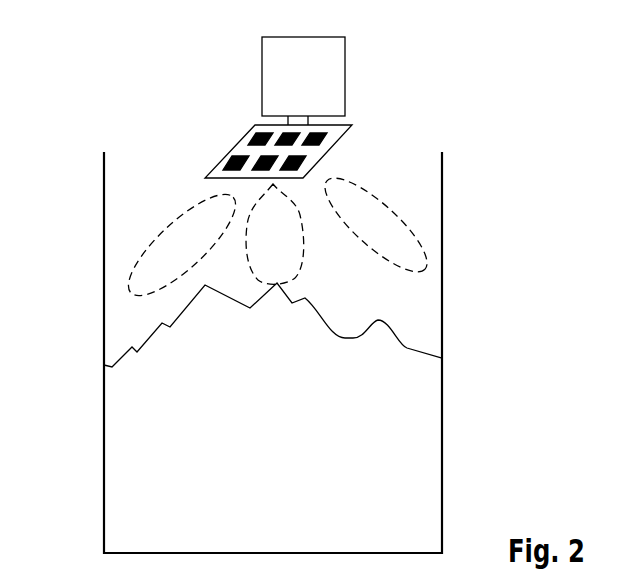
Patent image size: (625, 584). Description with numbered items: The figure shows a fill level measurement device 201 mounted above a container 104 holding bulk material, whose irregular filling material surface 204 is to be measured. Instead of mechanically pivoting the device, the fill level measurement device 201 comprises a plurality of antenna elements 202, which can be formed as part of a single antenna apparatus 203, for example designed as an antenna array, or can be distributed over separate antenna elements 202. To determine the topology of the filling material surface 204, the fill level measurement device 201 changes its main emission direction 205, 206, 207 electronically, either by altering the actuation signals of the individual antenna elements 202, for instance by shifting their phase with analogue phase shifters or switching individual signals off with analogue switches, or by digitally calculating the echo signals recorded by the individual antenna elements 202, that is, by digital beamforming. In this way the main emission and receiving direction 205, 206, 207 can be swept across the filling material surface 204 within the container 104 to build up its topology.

The container 104 is at (442, 418).
The fill level measurement device 201 is at (345, 48).
The antenna elements 202 is at (327, 147).
The antenna apparatus 203 is at (247, 137).
The filling material surface 204 is at (379, 321).
The main emission direction 205 is at (165, 232).
The main emission direction 206 is at (253, 272).
The main emission direction 207 is at (376, 203).